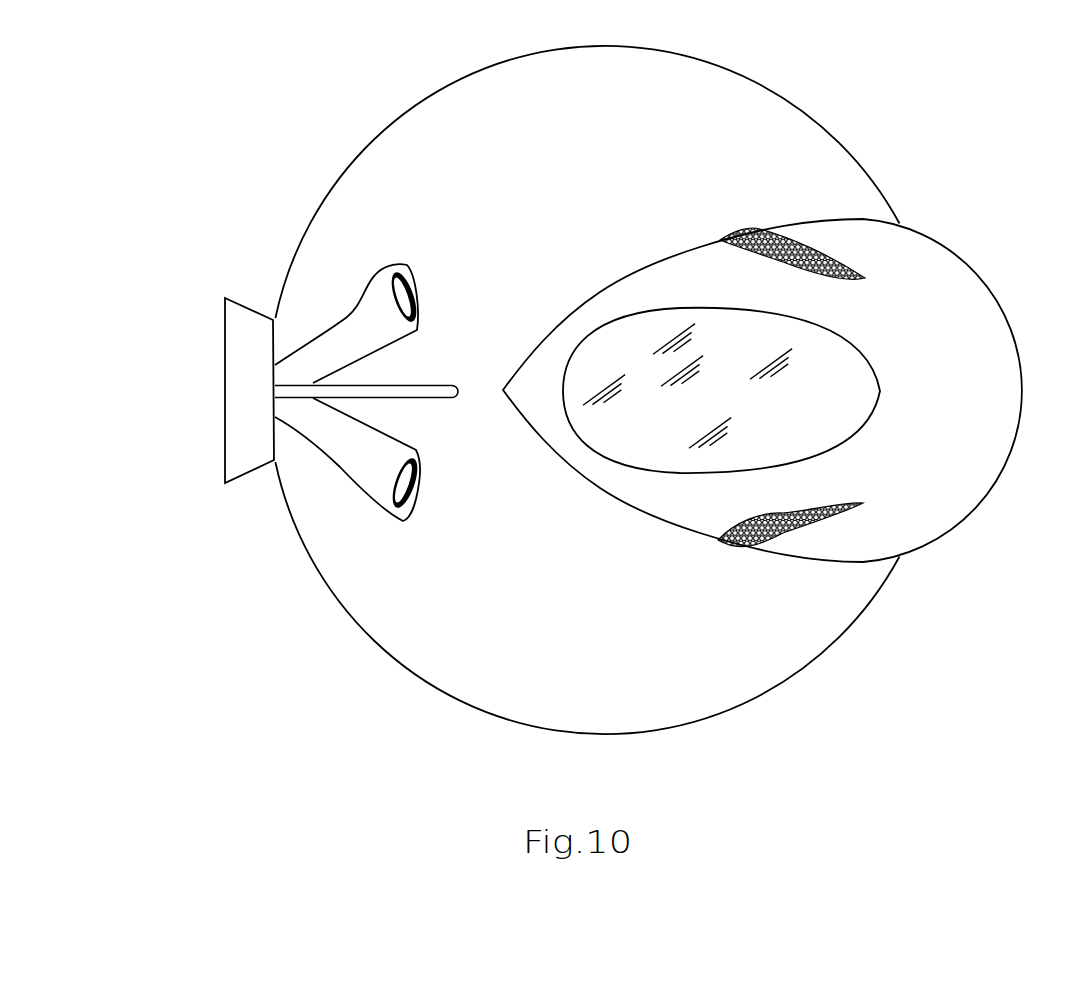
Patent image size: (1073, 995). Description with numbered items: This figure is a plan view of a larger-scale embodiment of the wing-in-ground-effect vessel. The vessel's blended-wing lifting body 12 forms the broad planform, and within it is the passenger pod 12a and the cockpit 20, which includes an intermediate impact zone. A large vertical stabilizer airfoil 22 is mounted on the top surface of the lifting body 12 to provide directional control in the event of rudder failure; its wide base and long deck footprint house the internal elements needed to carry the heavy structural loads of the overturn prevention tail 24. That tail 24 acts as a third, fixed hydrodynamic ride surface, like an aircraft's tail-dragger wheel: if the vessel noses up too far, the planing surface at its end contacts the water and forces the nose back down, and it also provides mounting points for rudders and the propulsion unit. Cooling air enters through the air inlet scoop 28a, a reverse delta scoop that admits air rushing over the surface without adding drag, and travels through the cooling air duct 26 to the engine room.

The blended-wing lifting body 12 is at (610, 133).
The passenger pod 12a is at (1012, 403).
The cockpit with intermediate impact zone 20 is at (845, 388).
The vertical stabilizer airfoil 22 is at (388, 393).
The overturn prevention tail 24 is at (223, 357).
The cooling air duct 26 is at (358, 307).
The air inlet scoop 28a is at (412, 287).